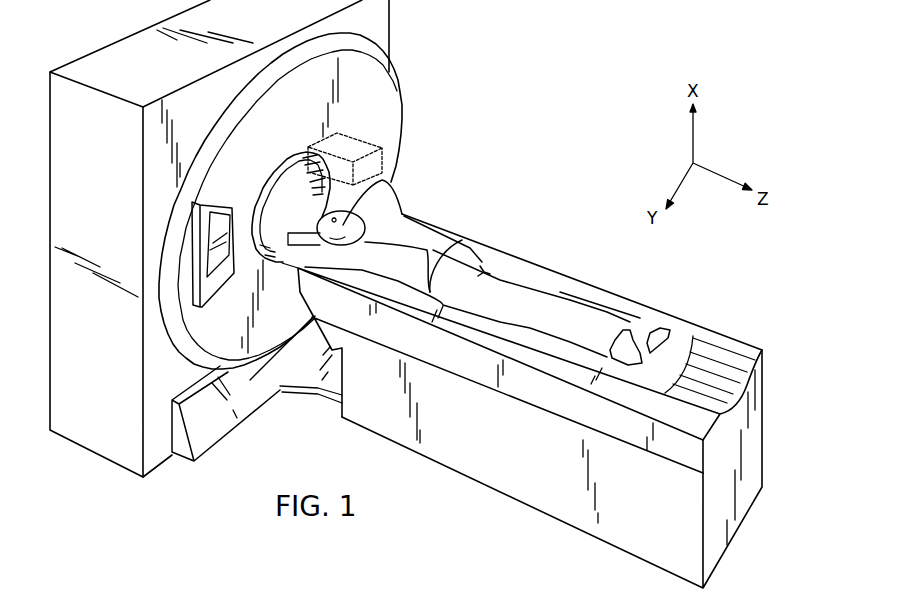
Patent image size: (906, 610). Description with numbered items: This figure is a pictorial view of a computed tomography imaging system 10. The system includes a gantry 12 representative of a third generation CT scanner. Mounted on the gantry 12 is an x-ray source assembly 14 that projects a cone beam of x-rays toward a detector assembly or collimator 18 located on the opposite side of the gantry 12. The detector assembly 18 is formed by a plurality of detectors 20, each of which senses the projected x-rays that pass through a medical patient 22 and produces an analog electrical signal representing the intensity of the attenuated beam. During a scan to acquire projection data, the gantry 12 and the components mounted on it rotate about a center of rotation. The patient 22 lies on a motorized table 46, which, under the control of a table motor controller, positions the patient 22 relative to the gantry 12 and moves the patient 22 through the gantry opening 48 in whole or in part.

The computed tomography (CT) imaging system 10 is at (502, 100).
The gantry 12 is at (388, 128).
The x-ray source assembly 14 is at (385, 164).
The detector assembly or collimator 18 is at (216, 284).
The detectors 20 is at (232, 206).
The medical patient 22 is at (426, 240).
The motorized table 46 is at (515, 483).
The gantry opening 48 is at (277, 195).